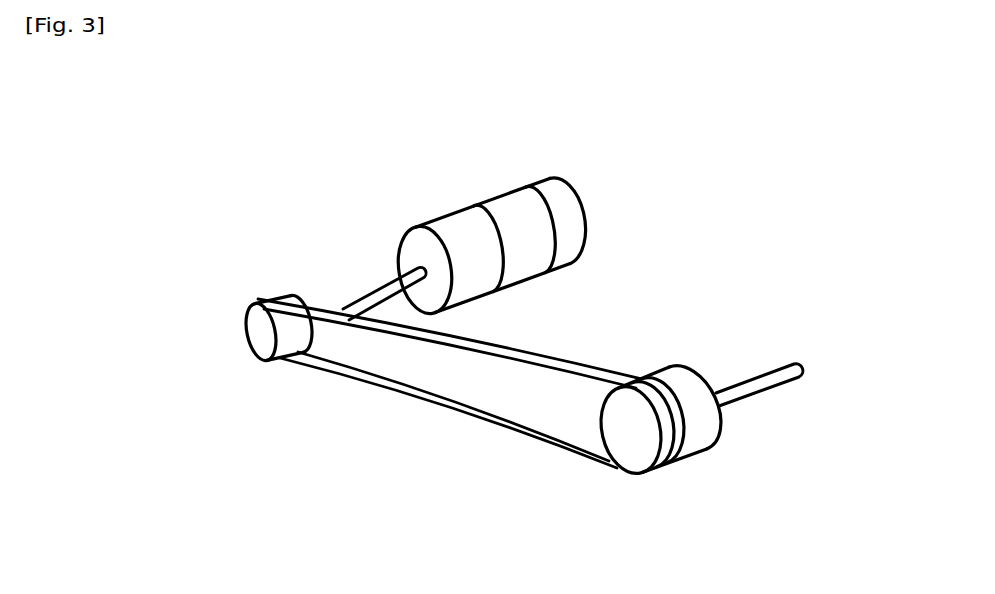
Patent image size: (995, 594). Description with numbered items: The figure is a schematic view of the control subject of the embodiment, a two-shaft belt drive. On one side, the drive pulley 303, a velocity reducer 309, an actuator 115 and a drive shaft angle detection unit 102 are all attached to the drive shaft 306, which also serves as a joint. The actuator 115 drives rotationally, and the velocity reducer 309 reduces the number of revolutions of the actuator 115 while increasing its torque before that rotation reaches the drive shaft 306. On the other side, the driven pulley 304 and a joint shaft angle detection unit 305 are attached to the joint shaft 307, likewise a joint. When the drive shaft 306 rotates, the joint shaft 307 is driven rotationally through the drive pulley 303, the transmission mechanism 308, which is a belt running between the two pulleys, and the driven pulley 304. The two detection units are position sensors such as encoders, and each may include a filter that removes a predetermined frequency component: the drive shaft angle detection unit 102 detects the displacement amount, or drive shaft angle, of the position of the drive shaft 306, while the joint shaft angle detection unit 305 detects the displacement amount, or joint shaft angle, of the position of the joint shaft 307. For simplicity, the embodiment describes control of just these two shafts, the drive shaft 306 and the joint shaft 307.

The drive shaft angle detection unit 102 is at (534, 225).
The actuator 115 is at (505, 202).
The velocity reducer 309 is at (445, 212).
The drive pulley 303 is at (285, 292).
The driven pulley 304 is at (635, 458).
The joint shaft angle detection unit 305 is at (693, 438).
The drive shaft 306 is at (363, 288).
The joint shaft 307 is at (783, 358).
The transmission mechanism 308 is at (537, 350).